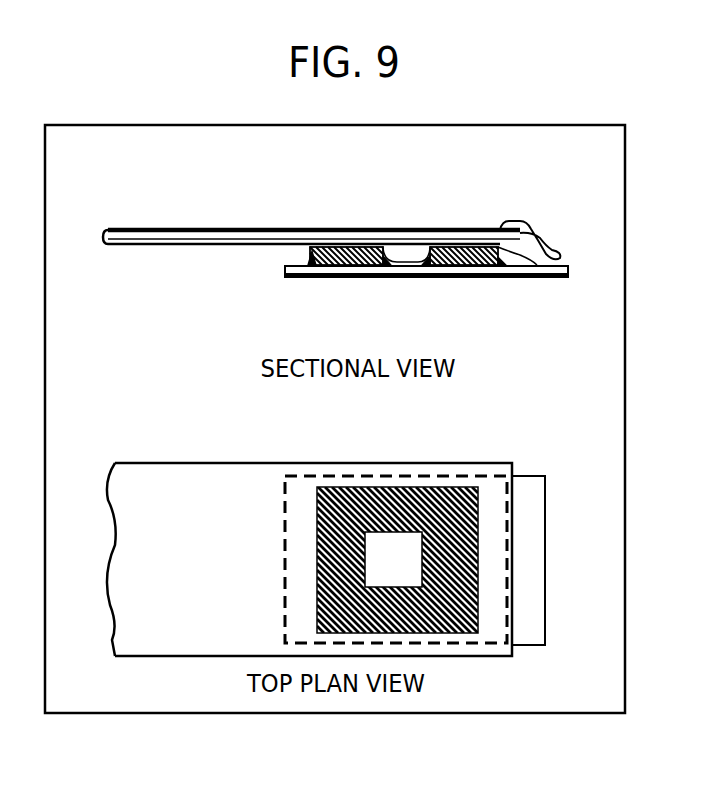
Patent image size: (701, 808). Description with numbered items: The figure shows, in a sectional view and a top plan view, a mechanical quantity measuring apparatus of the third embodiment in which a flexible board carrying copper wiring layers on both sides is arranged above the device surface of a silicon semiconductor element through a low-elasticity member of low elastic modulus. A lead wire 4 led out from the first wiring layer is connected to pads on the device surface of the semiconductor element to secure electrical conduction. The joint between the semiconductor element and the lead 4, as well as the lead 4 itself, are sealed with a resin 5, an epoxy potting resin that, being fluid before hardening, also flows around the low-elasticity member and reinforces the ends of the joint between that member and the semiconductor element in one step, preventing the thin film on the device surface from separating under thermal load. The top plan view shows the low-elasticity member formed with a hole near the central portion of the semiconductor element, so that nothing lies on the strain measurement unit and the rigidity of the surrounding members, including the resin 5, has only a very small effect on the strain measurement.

The lead wire 4 is at (553, 253).
The resin 5 is at (525, 228).